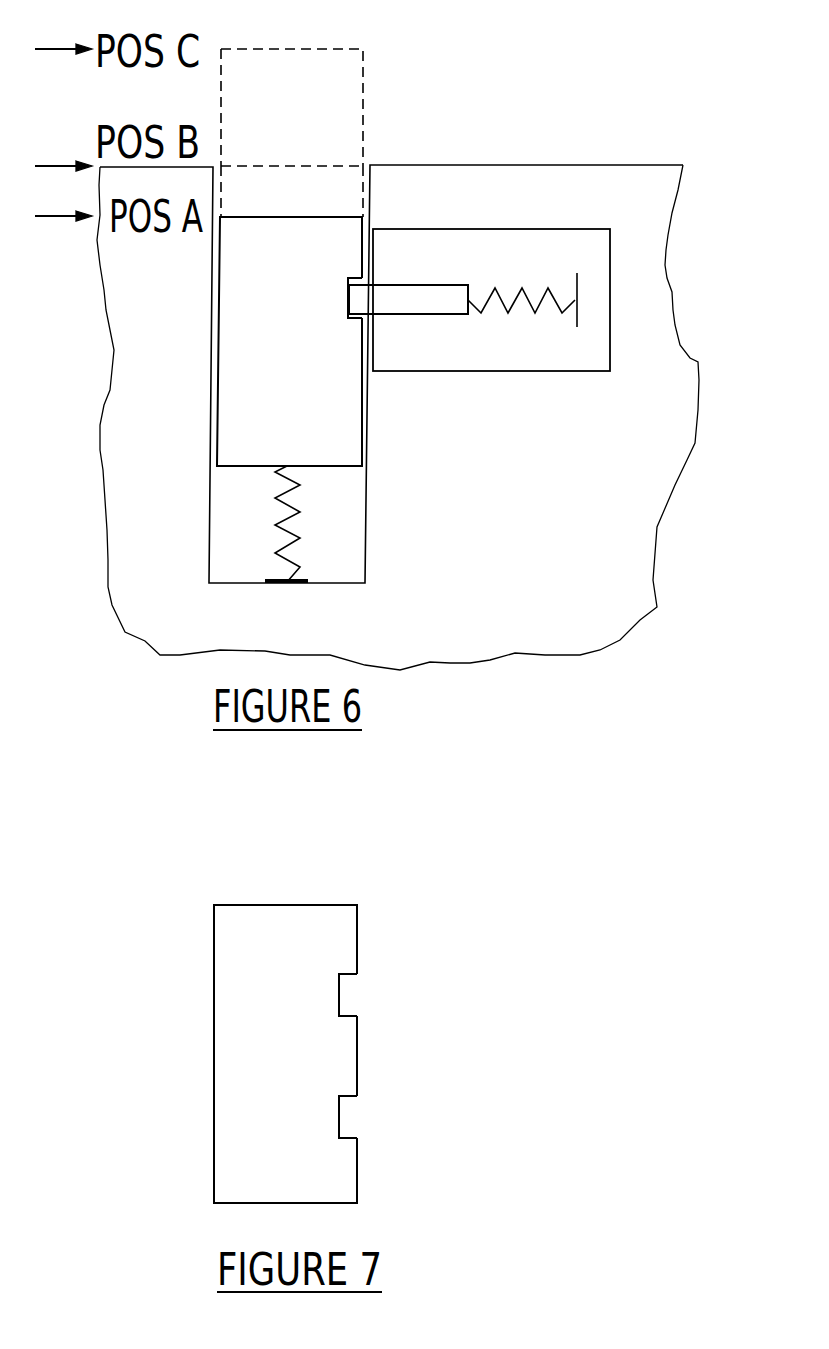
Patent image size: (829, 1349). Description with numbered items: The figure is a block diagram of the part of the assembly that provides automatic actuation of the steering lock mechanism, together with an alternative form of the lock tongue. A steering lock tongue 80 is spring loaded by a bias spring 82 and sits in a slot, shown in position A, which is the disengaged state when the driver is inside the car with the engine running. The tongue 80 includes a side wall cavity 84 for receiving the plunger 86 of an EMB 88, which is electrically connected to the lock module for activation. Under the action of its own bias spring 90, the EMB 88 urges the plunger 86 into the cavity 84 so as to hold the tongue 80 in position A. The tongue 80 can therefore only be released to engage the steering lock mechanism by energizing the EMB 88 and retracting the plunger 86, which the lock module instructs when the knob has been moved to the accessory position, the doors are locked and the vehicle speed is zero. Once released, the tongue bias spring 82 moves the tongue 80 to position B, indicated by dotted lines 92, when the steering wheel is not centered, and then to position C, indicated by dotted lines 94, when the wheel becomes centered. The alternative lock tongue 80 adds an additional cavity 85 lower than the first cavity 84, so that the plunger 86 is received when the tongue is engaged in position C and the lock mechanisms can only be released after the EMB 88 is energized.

In FIG. 6, the steering lock tongue 80 is at (304, 361).
In FIG. 7, the steering lock tongue 80 is at (295, 1075).
In FIG. 6, the bias spring 82 is at (287, 524).
In FIG. 6, the side wall cavity 84 is at (348, 278).
In FIG. 7, the side wall cavity 84 is at (340, 998).
In FIG. 7, the additional cavity 85 is at (340, 1120).
In FIG. 6, the plunger 86 is at (428, 298).
In FIG. 6, the EMB 88 is at (610, 318).
In FIG. 6, the bias spring 90 is at (528, 298).
In FIG. 6, the dotted lines 92 is at (310, 165).
In FIG. 6, the dotted lines 94 is at (322, 50).